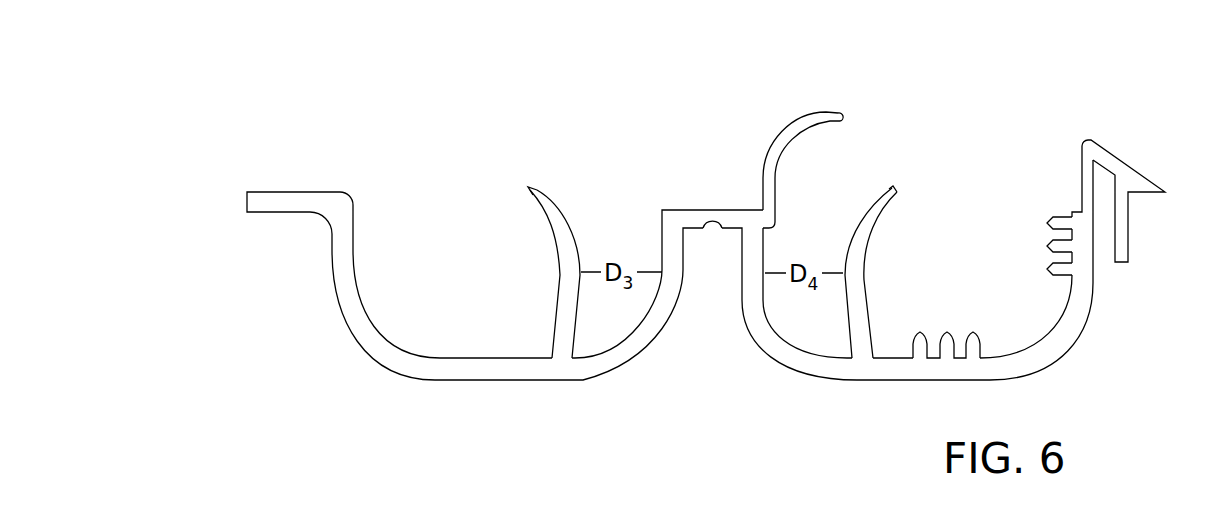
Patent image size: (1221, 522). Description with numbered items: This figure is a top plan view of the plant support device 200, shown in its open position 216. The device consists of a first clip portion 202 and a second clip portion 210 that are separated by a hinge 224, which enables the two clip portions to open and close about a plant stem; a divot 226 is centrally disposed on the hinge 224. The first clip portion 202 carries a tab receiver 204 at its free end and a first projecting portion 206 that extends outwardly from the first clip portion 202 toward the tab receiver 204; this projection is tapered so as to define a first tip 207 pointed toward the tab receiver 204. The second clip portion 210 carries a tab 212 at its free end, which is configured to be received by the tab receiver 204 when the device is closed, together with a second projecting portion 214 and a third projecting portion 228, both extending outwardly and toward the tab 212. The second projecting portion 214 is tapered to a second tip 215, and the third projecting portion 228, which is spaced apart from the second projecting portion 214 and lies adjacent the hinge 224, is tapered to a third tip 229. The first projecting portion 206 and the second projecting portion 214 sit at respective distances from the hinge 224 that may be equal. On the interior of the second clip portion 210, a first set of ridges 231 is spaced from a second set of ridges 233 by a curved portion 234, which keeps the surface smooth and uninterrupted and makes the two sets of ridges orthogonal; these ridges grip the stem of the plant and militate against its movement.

The plant support device 200 is at (145, 59).
The first clip portion 202 is at (373, 338).
The tab receiver 204 is at (275, 203).
The first projecting portion 206 is at (567, 300).
The first tip 207 is at (531, 188).
The second clip portion 210 is at (1072, 312).
The tab 212 is at (1132, 182).
The second projecting portion 214 is at (857, 300).
The second tip 215 is at (893, 188).
The open position 216 is at (604, 138).
The hinge 224 is at (696, 230).
The divot 226 is at (712, 224).
The third projecting portion 228 is at (800, 128).
The third tip 229 is at (841, 118).
The first set of ridges 231 is at (1062, 220).
The second set of ridges 233 is at (947, 335).
The curved portion 234 is at (1027, 352).